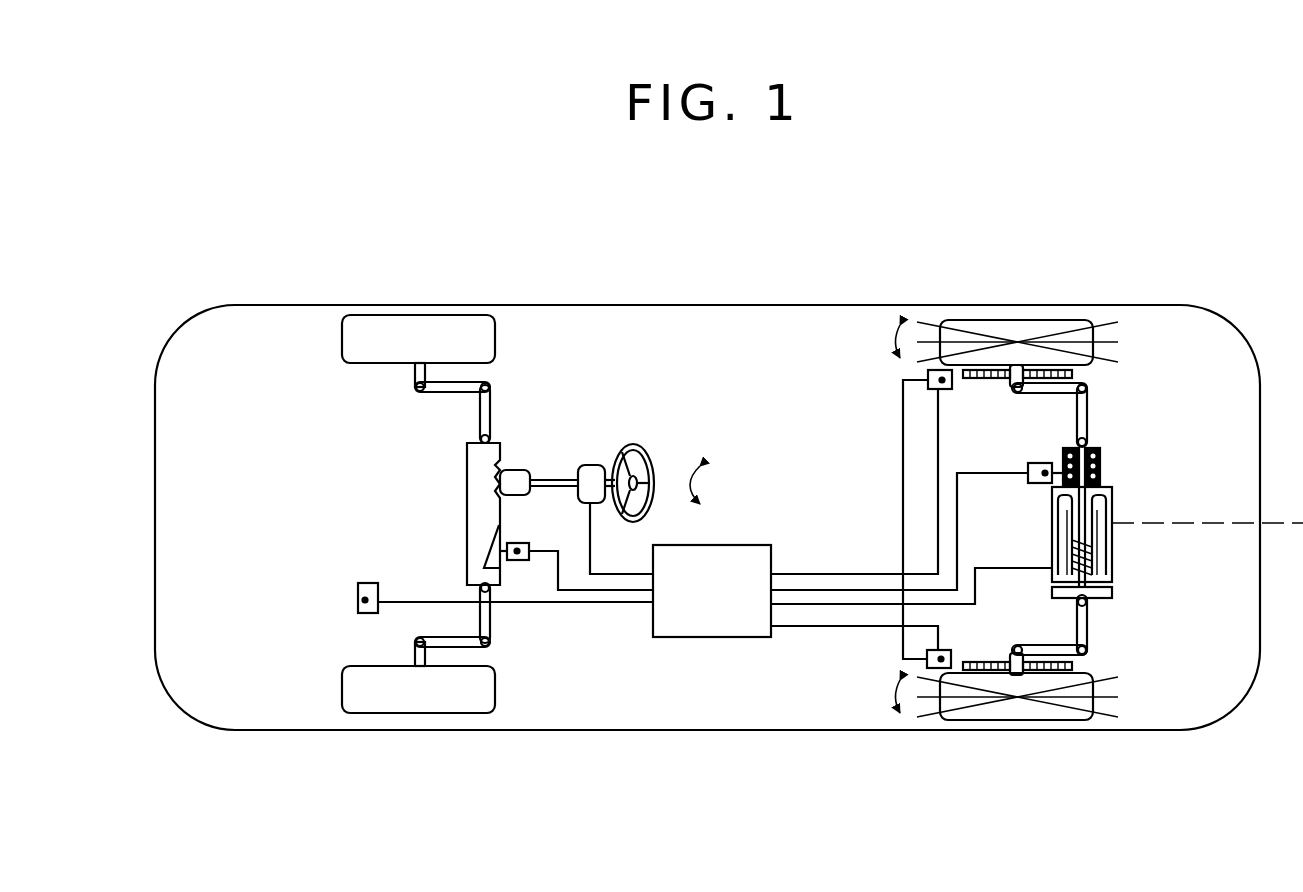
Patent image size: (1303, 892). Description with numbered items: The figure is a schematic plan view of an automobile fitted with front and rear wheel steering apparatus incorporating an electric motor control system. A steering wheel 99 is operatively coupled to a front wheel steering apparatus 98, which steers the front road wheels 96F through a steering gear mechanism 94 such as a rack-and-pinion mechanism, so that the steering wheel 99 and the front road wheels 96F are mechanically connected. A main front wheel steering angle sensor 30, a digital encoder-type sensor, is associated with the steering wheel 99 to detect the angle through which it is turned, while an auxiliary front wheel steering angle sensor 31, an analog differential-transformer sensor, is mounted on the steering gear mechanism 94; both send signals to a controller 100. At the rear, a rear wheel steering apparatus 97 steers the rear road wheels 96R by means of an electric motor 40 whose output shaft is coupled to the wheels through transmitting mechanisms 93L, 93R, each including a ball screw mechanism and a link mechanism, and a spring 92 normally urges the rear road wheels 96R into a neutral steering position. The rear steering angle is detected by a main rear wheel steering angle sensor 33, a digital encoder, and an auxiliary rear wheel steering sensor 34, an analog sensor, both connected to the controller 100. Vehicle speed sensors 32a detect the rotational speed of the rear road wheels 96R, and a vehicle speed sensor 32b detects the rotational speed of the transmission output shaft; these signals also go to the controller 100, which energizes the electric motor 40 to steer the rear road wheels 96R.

The main front wheel steering angle sensor 30 is at (586, 465).
The auxiliary front wheel steering angle sensor 31 is at (530, 561).
The vehicle speed sensors 32a is at (928, 378).
The vehicle speed sensor 32b is at (360, 586).
The main rear wheel steering angle sensor 33 is at (1106, 598).
The auxiliary rear wheel steering sensor 34 is at (1040, 462).
The electric motor 40 is at (1104, 562).
The spring 92 is at (1100, 486).
The transmitting mechanism 93R is at (1090, 422).
The transmitting mechanism 93L is at (1090, 632).
The steering gear mechanism 94 is at (470, 510).
The front road wheels 96F is at (350, 341).
The rear road wheels 96R is at (1048, 322).
The rear wheel steering apparatus 97 is at (1094, 522).
The front wheel steering apparatus 98 is at (508, 430).
The steering wheel 99 is at (647, 456).
The controller 100 is at (760, 550).